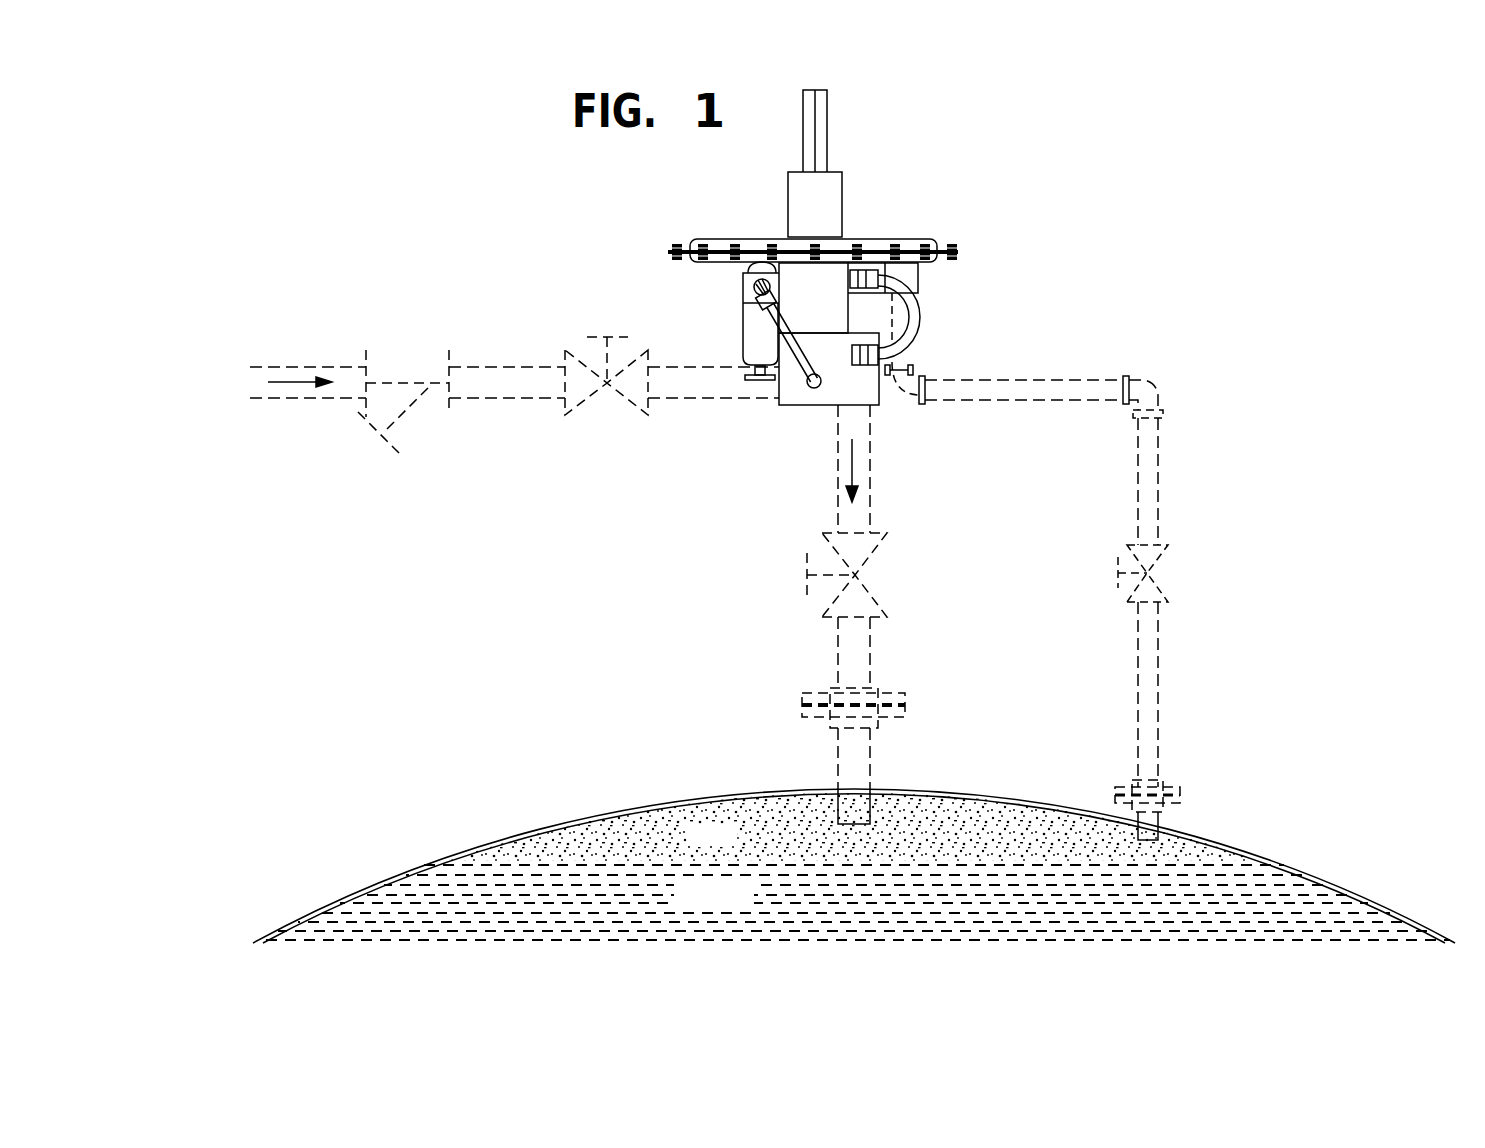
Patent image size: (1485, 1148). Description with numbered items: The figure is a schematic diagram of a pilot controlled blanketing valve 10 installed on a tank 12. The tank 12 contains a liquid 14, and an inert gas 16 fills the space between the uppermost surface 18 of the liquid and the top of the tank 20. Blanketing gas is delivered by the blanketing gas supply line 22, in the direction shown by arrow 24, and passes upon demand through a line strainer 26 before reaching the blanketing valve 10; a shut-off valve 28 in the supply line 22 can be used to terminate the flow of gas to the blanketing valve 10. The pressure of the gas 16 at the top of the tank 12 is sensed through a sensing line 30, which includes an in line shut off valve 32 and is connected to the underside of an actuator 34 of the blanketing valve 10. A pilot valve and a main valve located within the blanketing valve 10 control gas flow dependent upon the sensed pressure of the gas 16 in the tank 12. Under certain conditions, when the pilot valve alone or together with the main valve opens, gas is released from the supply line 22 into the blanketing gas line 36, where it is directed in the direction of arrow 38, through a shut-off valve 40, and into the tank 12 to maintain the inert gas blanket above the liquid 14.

The pilot controlled blanketing valve 10 is at (850, 311).
The tank 12 is at (854, 846).
The liquid 14 is at (973, 925).
The inert gas 16 is at (770, 810).
The uppermost surface of the liquid 18 is at (563, 857).
The top of the tank 20 is at (972, 808).
The blanketing gas supply line 22 is at (302, 412).
The arrow 24 is at (479, 408).
The line strainer 26 is at (418, 414).
The shut-off valve 28 is at (565, 358).
The sensing line 30 is at (1145, 668).
The in line shut off valve 32 is at (1130, 555).
The actuator 34 is at (935, 258).
The blanketing gas line 36 is at (854, 630).
The arrow 38 is at (853, 472).
The shut-off valve 40 is at (832, 548).